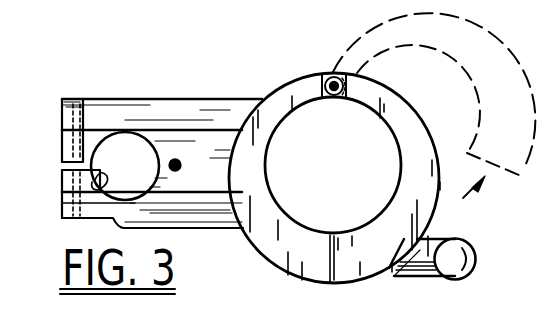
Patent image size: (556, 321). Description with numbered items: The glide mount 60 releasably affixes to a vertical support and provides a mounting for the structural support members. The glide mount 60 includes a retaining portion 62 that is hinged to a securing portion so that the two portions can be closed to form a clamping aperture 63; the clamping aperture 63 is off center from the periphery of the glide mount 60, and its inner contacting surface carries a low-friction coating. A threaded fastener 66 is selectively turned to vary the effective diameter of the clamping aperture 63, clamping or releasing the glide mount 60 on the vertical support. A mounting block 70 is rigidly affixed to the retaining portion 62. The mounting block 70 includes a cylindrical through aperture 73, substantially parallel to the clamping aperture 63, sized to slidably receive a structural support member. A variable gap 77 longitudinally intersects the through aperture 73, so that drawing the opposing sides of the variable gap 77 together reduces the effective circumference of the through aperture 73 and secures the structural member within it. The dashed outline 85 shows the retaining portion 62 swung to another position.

The pivot arm assembly 60 is at (178, 72).
The mounting block 70 is at (78, 100).
The bore 77 is at (70, 163).
The latch block 73 is at (62, 193).
The wheel 62 is at (265, 245).
The pivot pin 63 is at (283, 119).
The roller 66 is at (421, 276).
The phantom position of wheel 85 is at (426, 99).